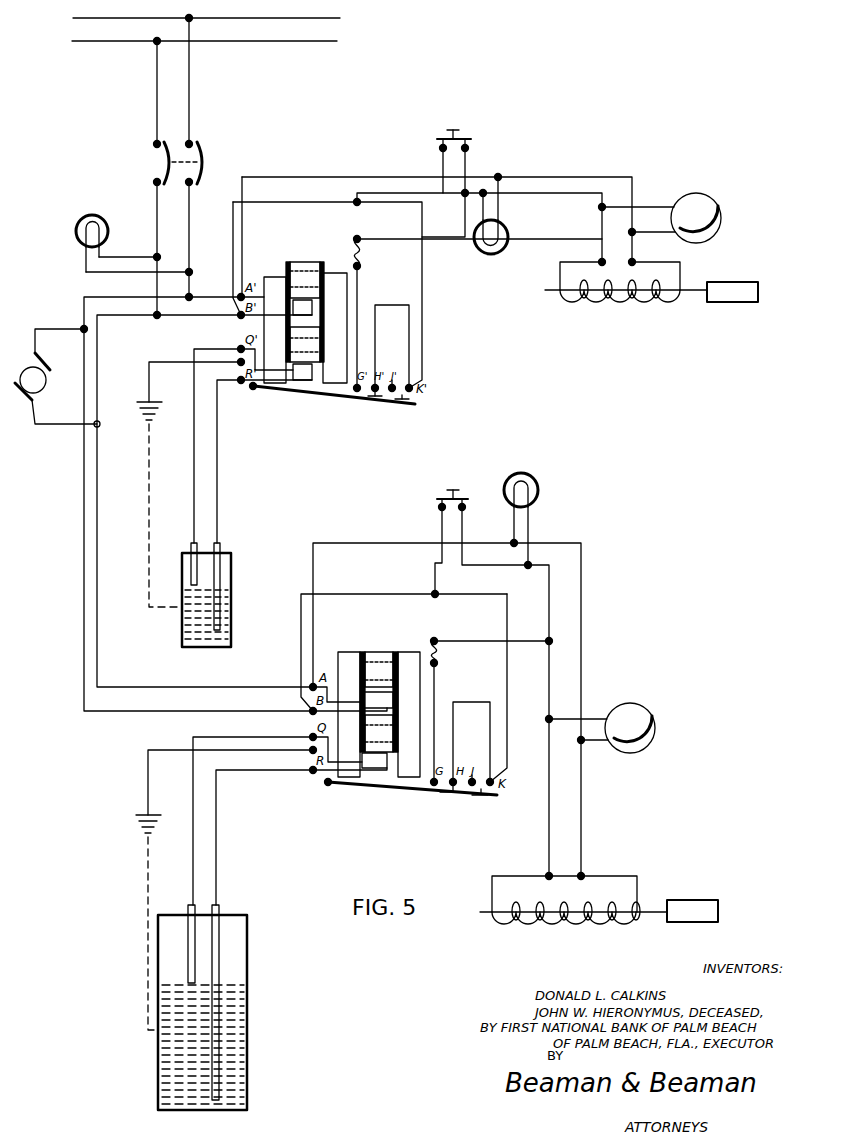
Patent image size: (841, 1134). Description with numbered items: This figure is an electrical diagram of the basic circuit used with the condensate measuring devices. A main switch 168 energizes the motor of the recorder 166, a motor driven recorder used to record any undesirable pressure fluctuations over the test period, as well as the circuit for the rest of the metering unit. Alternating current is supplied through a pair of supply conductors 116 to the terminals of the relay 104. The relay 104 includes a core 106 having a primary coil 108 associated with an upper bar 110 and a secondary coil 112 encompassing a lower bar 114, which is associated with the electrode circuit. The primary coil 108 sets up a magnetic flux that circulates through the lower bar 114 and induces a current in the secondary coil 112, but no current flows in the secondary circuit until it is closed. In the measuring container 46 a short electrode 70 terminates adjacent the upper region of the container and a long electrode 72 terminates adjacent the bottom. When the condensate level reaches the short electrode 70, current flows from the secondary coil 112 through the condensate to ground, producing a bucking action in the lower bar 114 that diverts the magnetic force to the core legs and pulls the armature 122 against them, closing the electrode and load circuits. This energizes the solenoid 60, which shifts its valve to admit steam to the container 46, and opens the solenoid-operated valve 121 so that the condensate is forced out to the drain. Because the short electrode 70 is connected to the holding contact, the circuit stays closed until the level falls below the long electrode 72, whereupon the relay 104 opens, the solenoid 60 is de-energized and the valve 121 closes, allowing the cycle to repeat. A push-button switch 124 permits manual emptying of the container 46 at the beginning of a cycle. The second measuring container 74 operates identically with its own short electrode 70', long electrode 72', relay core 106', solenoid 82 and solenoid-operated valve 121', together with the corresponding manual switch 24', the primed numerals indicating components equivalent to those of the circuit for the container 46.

The main switch 168 is at (203, 162).
The push button switch 24' is at (454, 121).
The core 106' is at (305, 308).
The relay 104 is at (293, 398).
The solenoid-operated valve 121' is at (716, 213).
The electric solenoid 82 is at (599, 303).
The motor driven recorder 166 is at (46, 386).
The supply conductors 116 is at (84, 527).
The short electrode 70' is at (176, 559).
The long electrode 72' is at (243, 581).
The condensate measuring container 74 is at (267, 584).
The push-button switch 124 is at (463, 470).
The core 106 is at (344, 701).
The primary coil 108 is at (383, 653).
The upper bar 110 is at (408, 660).
The secondary coil 112 is at (382, 720).
The lower bar 114 is at (378, 751).
The armature 122 is at (400, 790).
The solenoid-operated valve 121 is at (650, 725).
The electric solenoid 60 is at (570, 921).
The short electrode 70 is at (180, 944).
The long electrode 72 is at (229, 1002).
The measuring container 46 is at (247, 1008).